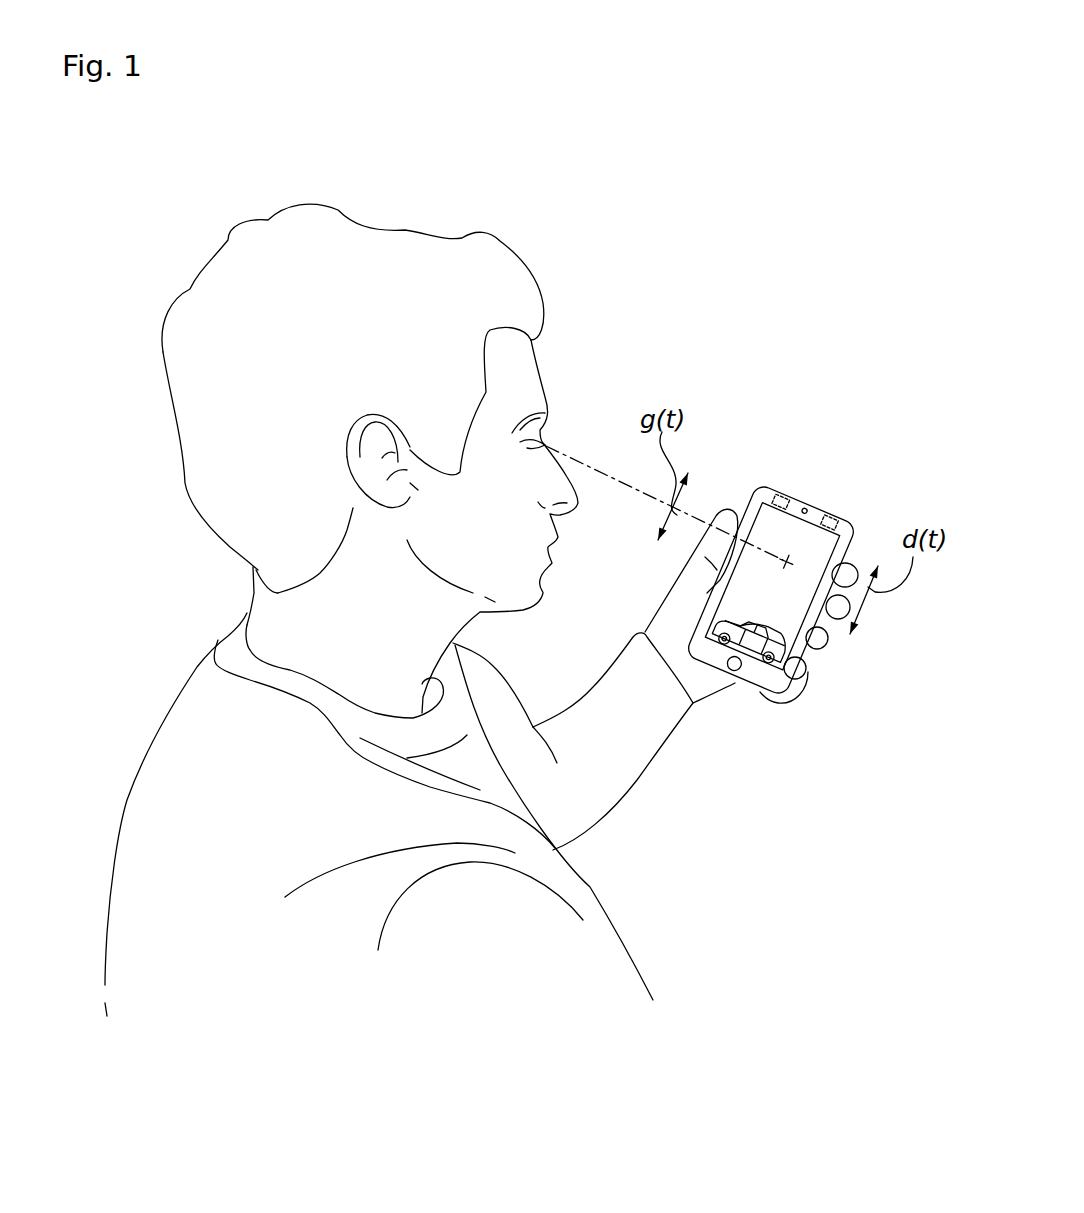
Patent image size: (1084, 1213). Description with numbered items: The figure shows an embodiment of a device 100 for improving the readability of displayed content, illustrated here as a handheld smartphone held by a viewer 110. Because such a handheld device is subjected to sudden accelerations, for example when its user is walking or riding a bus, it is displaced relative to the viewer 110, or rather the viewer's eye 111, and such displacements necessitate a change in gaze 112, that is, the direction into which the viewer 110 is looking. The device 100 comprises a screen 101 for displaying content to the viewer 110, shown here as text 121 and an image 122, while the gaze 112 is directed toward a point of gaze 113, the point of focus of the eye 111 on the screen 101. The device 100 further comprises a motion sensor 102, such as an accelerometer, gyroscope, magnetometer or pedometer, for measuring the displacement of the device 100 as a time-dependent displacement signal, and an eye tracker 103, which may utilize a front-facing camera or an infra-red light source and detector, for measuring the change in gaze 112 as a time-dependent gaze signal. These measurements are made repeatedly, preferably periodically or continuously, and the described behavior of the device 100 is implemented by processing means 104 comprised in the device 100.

The device 100 is at (805, 478).
The screen 101 is at (812, 578).
The motion sensor 102 is at (781, 489).
The eye tracker 103 is at (806, 511).
The processing means 104 is at (840, 513).
The viewer 110 is at (158, 272).
The eye 111 is at (545, 443).
The gaze 112 is at (622, 484).
The point of gaze 113 is at (786, 562).
The text 121 is at (798, 615).
The image 122 is at (757, 653).